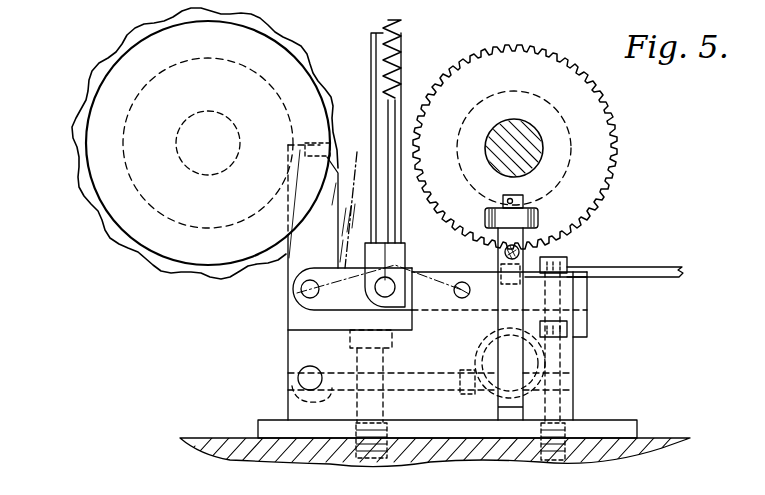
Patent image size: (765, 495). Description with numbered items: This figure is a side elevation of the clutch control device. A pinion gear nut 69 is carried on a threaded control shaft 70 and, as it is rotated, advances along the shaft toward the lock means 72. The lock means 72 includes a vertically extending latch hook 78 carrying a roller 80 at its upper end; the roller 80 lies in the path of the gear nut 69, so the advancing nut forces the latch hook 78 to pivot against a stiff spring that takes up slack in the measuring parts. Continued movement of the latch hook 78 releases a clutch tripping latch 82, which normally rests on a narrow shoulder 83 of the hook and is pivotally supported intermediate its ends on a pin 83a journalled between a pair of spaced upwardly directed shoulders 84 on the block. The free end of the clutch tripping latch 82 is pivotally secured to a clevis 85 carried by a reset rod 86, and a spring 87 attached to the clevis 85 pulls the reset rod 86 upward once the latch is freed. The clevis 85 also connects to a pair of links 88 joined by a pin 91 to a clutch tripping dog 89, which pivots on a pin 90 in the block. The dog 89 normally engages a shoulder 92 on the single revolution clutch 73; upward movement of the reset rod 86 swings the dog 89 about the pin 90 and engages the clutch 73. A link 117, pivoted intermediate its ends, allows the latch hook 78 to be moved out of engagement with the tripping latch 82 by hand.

The single revolution type clutch 73 is at (86, 79).
The shoulder 92 is at (331, 150).
The clutch tripping dog 89 is at (288, 322).
The links 88 is at (345, 311).
The pin 91 is at (300, 293).
The pin 90 is at (304, 390).
The reset rod 86 is at (372, 202).
The spring 87 is at (401, 21).
The clevis 85 is at (405, 250).
The shoulders 84 is at (408, 298).
The clutch tripping latch 82 is at (447, 272).
The pin 83a is at (462, 298).
The pinion gear nut 69 is at (612, 114).
The control shaft 70 is at (545, 129).
The roller 80 is at (538, 216).
The latch hook 78 is at (525, 262).
The shoulder 83 is at (589, 312).
The lock means 72 is at (587, 368).
The link 117 is at (620, 267).